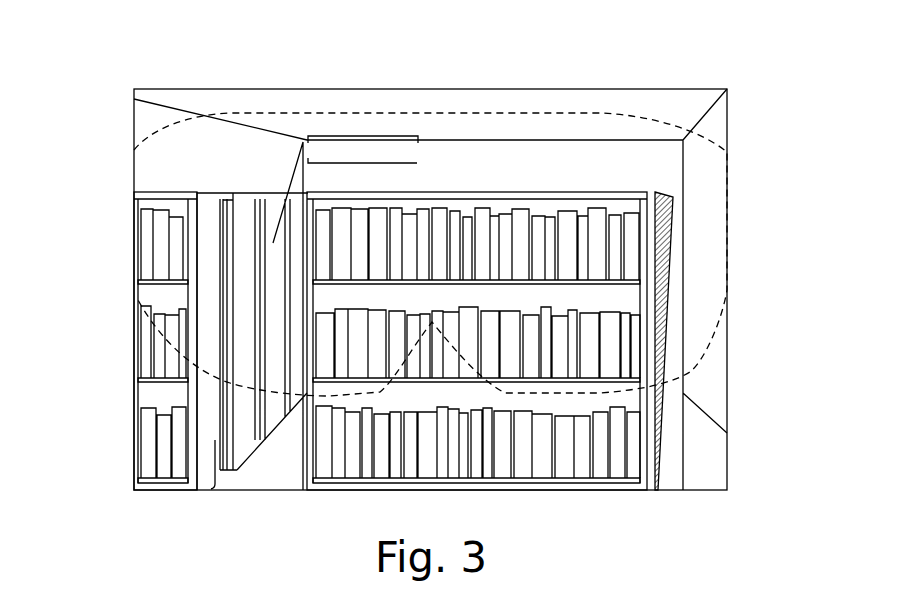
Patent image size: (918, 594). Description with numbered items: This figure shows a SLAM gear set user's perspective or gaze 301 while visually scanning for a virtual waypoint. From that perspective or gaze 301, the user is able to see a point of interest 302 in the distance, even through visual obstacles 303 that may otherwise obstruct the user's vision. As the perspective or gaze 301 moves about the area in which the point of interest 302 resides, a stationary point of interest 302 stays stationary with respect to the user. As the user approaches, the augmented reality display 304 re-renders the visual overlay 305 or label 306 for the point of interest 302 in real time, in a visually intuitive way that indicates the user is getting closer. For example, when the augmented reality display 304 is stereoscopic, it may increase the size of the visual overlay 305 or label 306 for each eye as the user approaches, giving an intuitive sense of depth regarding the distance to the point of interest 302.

The SLAM gear set user's perspective or gaze 301 is at (93, 113).
The point of interest 302 is at (273, 243).
The visual obstacles 303 is at (330, 392).
The augmented reality display 304 is at (693, 365).
The visual overlay 305 is at (303, 177).
The label 306 is at (350, 135).